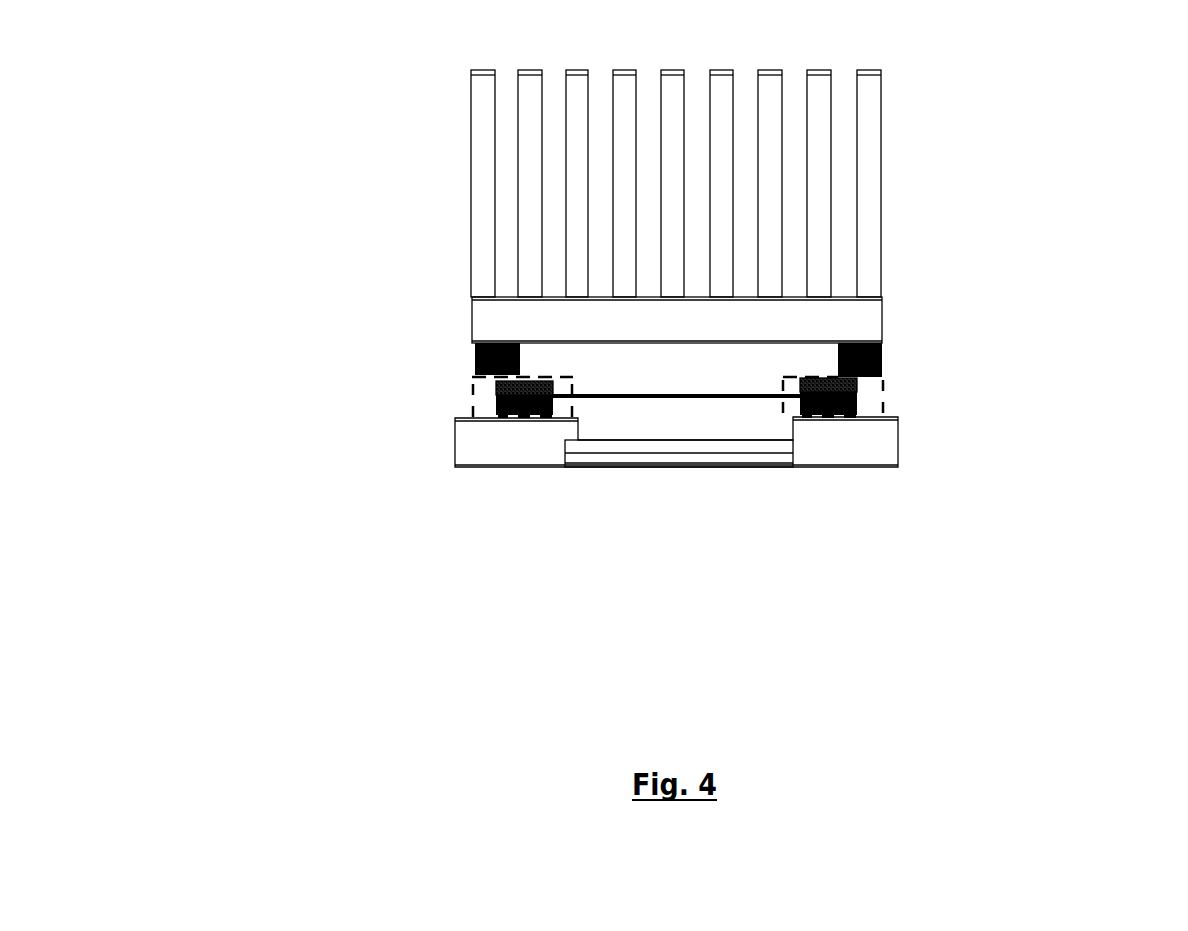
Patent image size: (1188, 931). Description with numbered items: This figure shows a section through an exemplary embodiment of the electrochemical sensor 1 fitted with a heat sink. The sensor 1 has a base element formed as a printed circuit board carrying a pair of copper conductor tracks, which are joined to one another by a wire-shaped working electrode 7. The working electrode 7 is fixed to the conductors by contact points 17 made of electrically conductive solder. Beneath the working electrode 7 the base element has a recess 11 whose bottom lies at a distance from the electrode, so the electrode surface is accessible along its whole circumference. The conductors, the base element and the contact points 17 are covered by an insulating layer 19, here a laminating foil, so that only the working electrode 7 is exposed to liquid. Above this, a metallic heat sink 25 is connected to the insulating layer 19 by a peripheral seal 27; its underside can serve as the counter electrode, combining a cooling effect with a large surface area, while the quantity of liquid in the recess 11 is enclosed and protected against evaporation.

The electrochemical sensor 1 is at (492, 588).
The wire-shaped working electrode 7 is at (703, 400).
The recess 11 is at (663, 441).
The contact points 17 is at (857, 400).
The insulating layer 19 is at (470, 392).
The metallic heat sink 25 is at (847, 325).
The peripheral seal 27 is at (473, 362).